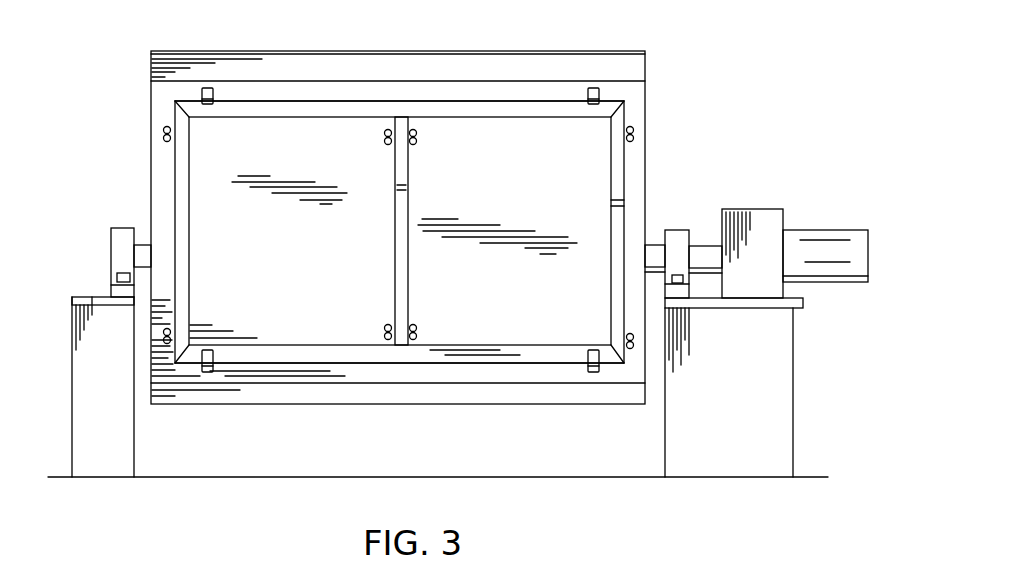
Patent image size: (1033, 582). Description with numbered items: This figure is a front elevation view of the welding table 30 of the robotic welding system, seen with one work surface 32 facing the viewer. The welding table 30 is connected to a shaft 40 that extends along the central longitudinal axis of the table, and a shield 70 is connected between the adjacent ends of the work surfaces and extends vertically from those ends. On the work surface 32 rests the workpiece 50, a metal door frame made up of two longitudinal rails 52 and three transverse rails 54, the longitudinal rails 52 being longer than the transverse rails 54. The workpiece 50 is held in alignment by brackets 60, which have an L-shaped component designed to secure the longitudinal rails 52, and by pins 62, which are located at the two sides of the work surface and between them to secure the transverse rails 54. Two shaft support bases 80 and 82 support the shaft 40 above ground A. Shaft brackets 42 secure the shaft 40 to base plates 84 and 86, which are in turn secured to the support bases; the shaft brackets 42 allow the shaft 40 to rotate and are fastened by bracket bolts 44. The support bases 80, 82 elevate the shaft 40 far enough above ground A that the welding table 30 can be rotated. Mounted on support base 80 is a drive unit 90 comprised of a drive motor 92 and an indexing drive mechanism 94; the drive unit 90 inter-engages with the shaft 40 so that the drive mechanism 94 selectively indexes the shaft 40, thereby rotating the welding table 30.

The welding table 30 is at (648, 91).
The work surface 32 is at (504, 93).
The shaft 40 is at (703, 253).
The shaft bracket 42 is at (123, 233).
The bracket bolt 44 is at (121, 278).
The workpiece 50 is at (279, 100).
The longitudinal rail 52 is at (312, 108).
The transverse rail 54 is at (183, 266).
The bracket 60 is at (207, 95).
The pin 62 is at (164, 128).
The shield 70 is at (430, 65).
The shaft support base 80 is at (782, 423).
The shaft support base 82 is at (123, 453).
The base plate 84 is at (757, 300).
The base plate 86 is at (90, 297).
The drive unit 90 is at (795, 215).
The drive motor 92 is at (825, 245).
The indexing drive mechanism 94 is at (750, 222).
The ground A is at (588, 476).